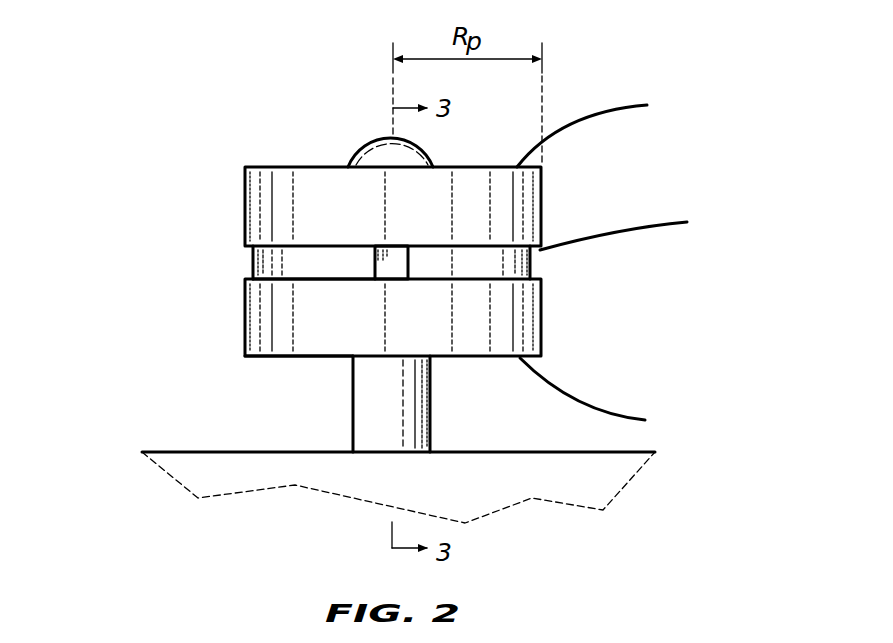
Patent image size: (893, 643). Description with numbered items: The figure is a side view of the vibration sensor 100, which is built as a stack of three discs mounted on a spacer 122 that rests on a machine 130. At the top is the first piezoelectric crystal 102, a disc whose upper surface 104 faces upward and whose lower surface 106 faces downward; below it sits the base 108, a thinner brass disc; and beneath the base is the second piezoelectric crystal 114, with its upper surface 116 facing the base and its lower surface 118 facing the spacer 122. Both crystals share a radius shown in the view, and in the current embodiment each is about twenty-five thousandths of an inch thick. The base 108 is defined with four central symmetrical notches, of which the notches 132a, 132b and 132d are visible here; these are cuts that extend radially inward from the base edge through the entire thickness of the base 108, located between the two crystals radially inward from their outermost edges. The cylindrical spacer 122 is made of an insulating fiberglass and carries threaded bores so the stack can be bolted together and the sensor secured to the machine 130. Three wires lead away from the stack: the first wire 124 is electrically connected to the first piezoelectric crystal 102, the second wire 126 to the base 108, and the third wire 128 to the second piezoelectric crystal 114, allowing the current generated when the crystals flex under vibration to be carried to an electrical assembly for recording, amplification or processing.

The vibration sensor 100 is at (198, 95).
The first piezoelectric crystal 102 is at (542, 195).
The upper surface 104 is at (503, 177).
The lower surface 106 is at (255, 238).
The base 108 is at (540, 268).
The second piezoelectric crystal 114 is at (267, 330).
The upper surface 116 is at (253, 284).
The lower surface 118 is at (277, 358).
The spacer 122 is at (432, 412).
The first wire 124 is at (606, 108).
The second wire 126 is at (656, 229).
The third wire 128 is at (612, 418).
The machine 130 is at (520, 486).
The notch 132a is at (387, 262).
The notch 132b is at (535, 257).
The notch 132d is at (250, 263).